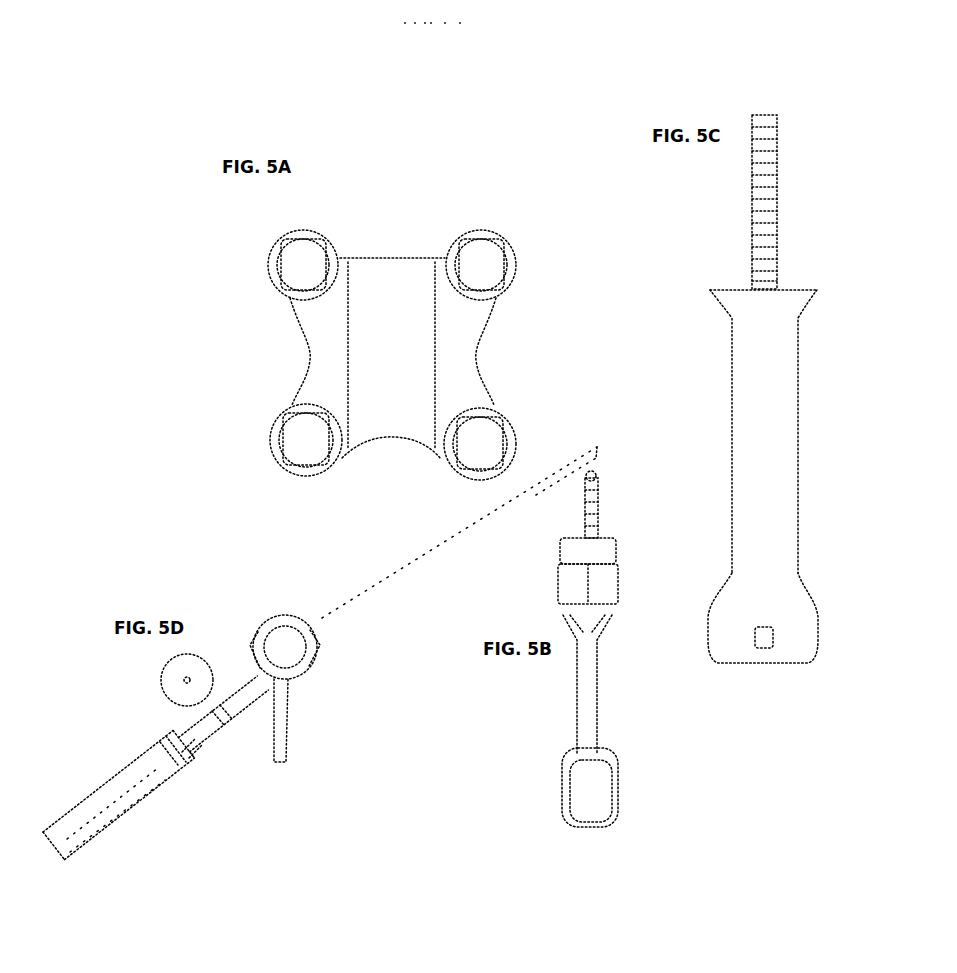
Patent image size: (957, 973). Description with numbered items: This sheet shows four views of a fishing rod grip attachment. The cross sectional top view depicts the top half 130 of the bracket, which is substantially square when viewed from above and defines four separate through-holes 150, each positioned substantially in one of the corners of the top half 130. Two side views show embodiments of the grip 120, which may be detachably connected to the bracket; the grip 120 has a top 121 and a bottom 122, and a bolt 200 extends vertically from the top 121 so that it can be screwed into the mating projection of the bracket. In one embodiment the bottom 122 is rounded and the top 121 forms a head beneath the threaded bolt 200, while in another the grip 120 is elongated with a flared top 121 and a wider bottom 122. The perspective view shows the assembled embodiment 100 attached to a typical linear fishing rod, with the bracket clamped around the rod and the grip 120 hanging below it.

In FIG. 5D, the surgical instrument / driver tool 100 is at (270, 620).
In FIG. 5B, the grip 120 is at (577, 684).
In FIG. 5C, the grip 120 is at (773, 392).
In FIG. 5B, the top of the grip 121 is at (623, 548).
In FIG. 5C, the top of the grip 121 is at (805, 276).
In FIG. 5B, the bottom of the grip 122 is at (608, 830).
In FIG. 5C, the bottom of the grip 122 is at (768, 678).
In FIG. 5A, the top half of the bracket 130 is at (426, 190).
In FIG. 5A, the through-holes 150 is at (473, 435).
In FIG. 5B, the bolt 200 is at (600, 485).
In FIG. 5C, the bolt 200 is at (750, 173).